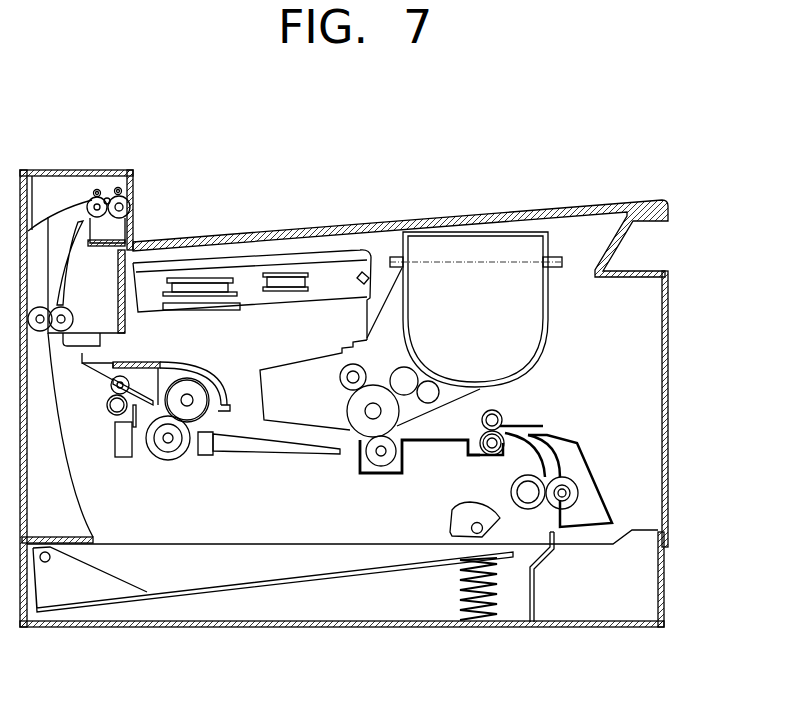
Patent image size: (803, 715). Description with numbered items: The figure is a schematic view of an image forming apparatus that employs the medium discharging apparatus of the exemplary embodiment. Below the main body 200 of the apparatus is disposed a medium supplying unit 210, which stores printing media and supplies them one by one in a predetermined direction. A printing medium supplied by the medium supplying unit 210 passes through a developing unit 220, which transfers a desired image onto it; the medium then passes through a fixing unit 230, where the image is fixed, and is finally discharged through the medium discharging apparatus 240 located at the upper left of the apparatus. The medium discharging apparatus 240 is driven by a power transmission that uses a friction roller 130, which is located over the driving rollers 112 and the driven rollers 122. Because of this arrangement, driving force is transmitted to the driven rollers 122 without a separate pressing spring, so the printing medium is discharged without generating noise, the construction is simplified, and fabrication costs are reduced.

The driving rollers 112 is at (90, 198).
The friction roller 130 is at (107, 197).
The driven rollers 122 is at (128, 198).
The medium discharging apparatus 240 is at (121, 334).
The developing unit 220 is at (386, 330).
The main body 200 is at (670, 324).
The medium supplying unit 210 is at (369, 602).
The fixing unit 230 is at (163, 464).